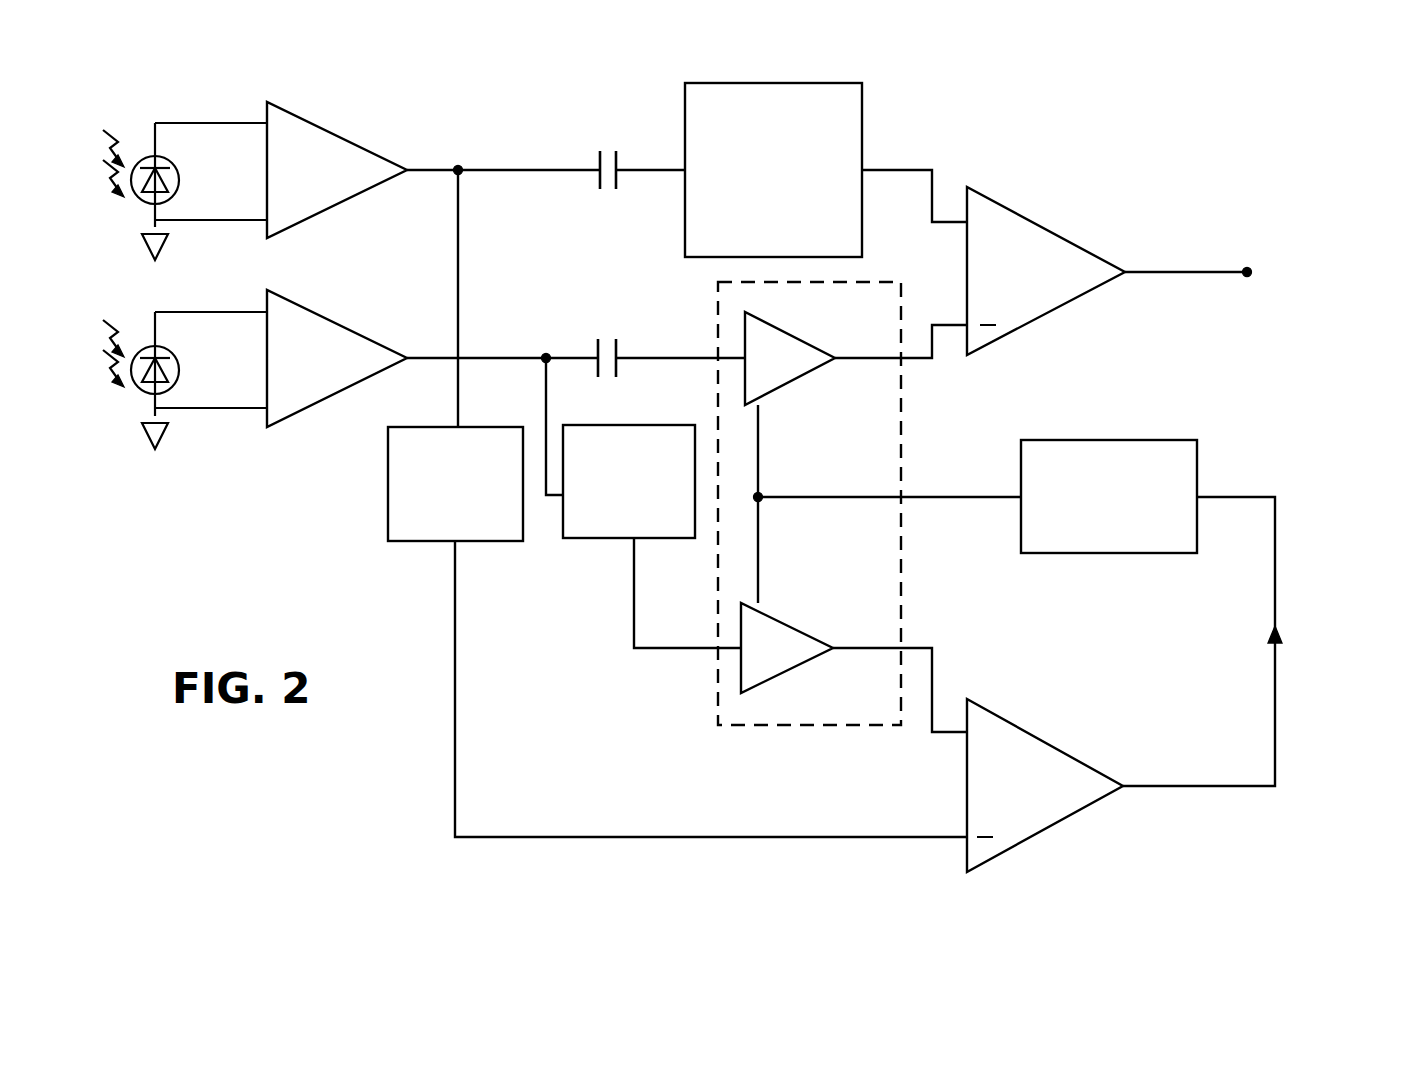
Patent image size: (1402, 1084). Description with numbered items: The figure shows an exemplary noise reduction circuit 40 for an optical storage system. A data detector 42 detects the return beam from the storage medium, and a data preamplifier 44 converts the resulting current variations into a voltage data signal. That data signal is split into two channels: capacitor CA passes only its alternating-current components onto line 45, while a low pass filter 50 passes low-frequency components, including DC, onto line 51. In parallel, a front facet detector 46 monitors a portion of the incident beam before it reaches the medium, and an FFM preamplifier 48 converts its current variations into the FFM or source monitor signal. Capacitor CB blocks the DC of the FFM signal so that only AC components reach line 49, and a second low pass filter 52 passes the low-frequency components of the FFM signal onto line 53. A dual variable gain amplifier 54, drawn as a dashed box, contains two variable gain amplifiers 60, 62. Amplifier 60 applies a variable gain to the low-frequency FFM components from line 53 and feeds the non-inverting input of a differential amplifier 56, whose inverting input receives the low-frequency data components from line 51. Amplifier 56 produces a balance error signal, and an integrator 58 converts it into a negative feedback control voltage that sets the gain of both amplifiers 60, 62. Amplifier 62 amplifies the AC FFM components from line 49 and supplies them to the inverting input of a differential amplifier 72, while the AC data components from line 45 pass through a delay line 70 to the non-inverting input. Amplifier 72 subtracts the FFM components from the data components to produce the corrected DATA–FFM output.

The noise reduction circuit 40 is at (230, 48).
The data detector 42 is at (180, 181).
The data preamplifier 44 is at (323, 123).
The line 45 is at (652, 175).
The front facet detector 46 is at (180, 371).
The FFM preamplifier 48 is at (333, 318).
The line 49 is at (657, 356).
The low pass filter 50 is at (388, 488).
The line 51 is at (455, 647).
The low pass filter 52 is at (595, 538).
The line 53 is at (634, 627).
The dual variable gain amplifier 54 is at (718, 708).
The differential amplifier 56 is at (1025, 727).
The integrator 58 is at (1197, 452).
The variable gain amplifier 60 is at (800, 629).
The variable gain amplifier 62 is at (787, 331).
The delay line 70 is at (760, 82).
The differential amplifier 72 is at (1005, 205).